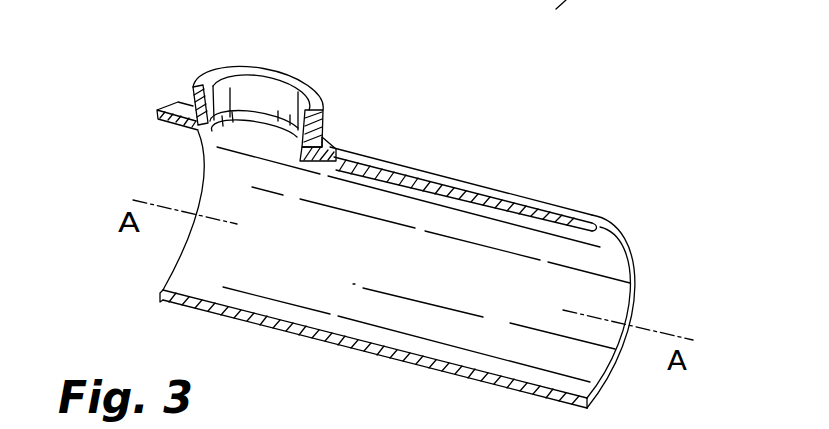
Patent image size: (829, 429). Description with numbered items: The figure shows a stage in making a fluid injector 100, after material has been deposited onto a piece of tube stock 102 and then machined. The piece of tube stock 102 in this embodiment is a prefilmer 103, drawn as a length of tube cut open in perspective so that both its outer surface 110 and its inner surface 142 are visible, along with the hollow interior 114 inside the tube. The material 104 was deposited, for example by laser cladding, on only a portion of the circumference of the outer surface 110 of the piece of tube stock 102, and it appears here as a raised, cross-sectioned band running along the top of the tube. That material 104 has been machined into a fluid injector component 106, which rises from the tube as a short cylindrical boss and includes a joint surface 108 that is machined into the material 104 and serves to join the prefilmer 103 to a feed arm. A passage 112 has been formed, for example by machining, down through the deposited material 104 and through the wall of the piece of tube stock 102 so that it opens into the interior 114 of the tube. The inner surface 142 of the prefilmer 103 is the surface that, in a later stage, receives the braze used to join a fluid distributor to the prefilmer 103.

The fluid injector 100 is at (608, 177).
The piece of tube stock 102 is at (380, 259).
The prefilmer 103 is at (428, 168).
The deposited material 104 is at (327, 100).
The fluid injector component 106 is at (361, 110).
The joint surface 108 is at (218, 95).
The outer surface 110 is at (523, 203).
The passage 112 is at (257, 118).
The interior 114 is at (406, 282).
The inner surface 142 is at (507, 331).